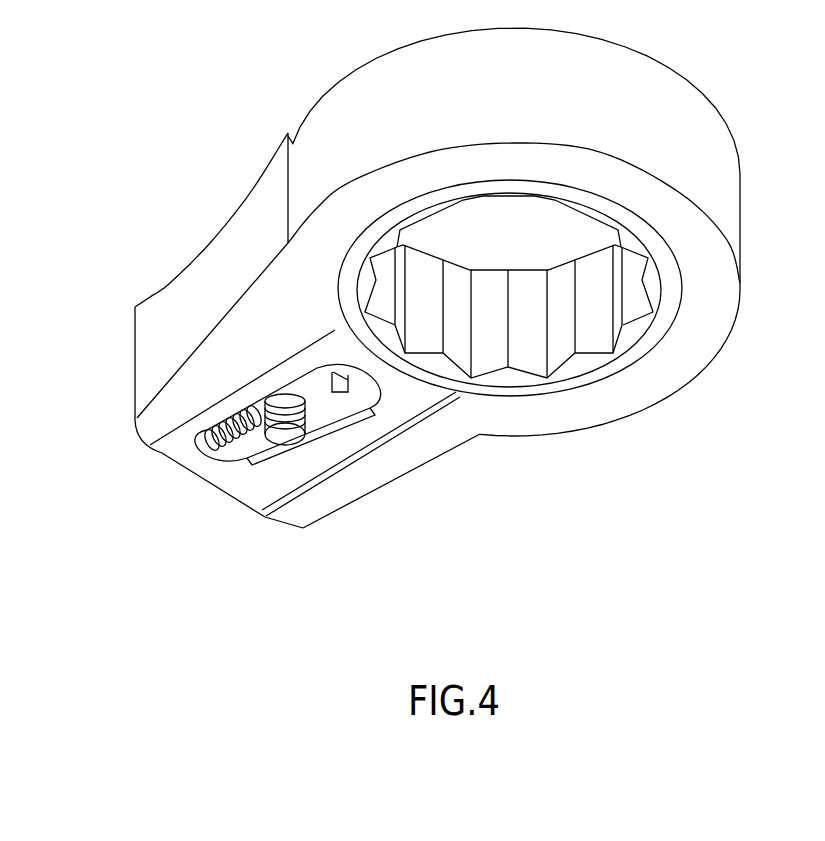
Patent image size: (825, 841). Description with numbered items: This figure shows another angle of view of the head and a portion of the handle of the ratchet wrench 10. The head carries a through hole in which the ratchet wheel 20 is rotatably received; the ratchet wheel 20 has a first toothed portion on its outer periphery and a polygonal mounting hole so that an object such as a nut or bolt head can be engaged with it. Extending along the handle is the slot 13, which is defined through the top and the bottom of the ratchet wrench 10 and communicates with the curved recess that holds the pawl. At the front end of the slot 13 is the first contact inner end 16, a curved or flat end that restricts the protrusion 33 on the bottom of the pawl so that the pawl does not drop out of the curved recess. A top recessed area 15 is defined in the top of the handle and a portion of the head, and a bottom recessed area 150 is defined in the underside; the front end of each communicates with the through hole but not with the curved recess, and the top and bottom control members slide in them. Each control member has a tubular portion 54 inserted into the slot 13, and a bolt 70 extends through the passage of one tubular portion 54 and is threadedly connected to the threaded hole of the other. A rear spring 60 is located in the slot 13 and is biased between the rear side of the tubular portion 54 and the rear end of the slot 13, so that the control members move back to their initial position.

The ratchet wrench 10 is at (732, 173).
The slot 13 is at (235, 472).
The top recessed area 15 is at (270, 387).
The first contact inner end 16 is at (395, 394).
The ratchet wheel 20 is at (613, 365).
The protrusion 33 is at (345, 370).
The tubular portion 54 is at (313, 413).
The rear spring 60 is at (240, 410).
The bolt 70 is at (285, 436).
The bottom recessed area 150 is at (307, 493).